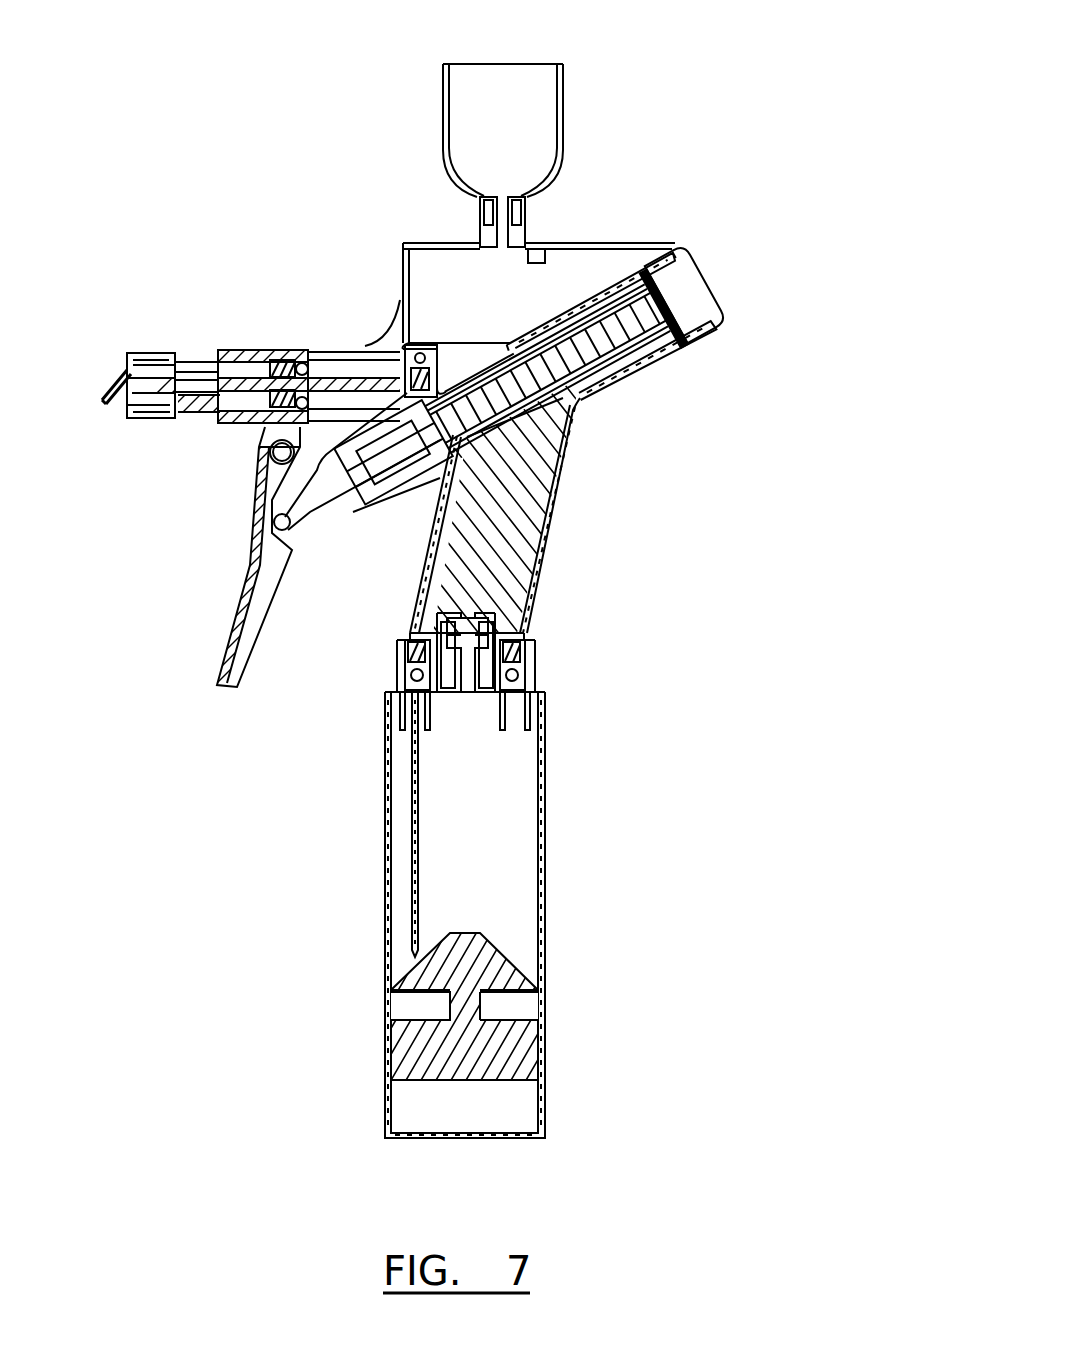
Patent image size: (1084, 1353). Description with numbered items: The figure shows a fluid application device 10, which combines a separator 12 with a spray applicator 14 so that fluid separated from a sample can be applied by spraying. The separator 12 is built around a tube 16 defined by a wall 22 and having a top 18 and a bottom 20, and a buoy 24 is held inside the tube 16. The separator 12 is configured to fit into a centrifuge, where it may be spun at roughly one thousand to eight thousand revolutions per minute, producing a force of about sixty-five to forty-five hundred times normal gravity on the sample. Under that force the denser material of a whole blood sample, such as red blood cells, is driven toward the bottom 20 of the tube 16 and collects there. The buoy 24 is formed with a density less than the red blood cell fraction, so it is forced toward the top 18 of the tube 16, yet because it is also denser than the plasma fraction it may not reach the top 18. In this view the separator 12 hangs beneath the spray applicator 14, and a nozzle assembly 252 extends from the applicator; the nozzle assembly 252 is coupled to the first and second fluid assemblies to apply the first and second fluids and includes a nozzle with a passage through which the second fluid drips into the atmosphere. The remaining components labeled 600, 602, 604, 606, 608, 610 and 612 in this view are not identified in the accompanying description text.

The fluid application device 10 is at (892, 72).
The separator 12 is at (597, 893).
The spray applicator 14 is at (222, 612).
The tube 16 is at (375, 1133).
The top 18 is at (545, 690).
The bottom 20 is at (525, 1142).
The wall 22 is at (385, 915).
The buoy 24 is at (522, 1056).
The nozzle assembly 252 is at (118, 336).
The nozzle assembly 600 is at (735, 252).
The threaded portion 602 is at (687, 350).
The nozzle cap 604 is at (712, 300).
The handle grip 606 is at (572, 499).
The gun body housing 608 is at (585, 272).
The cup connector 610 is at (483, 232).
The cup 612 is at (540, 120).